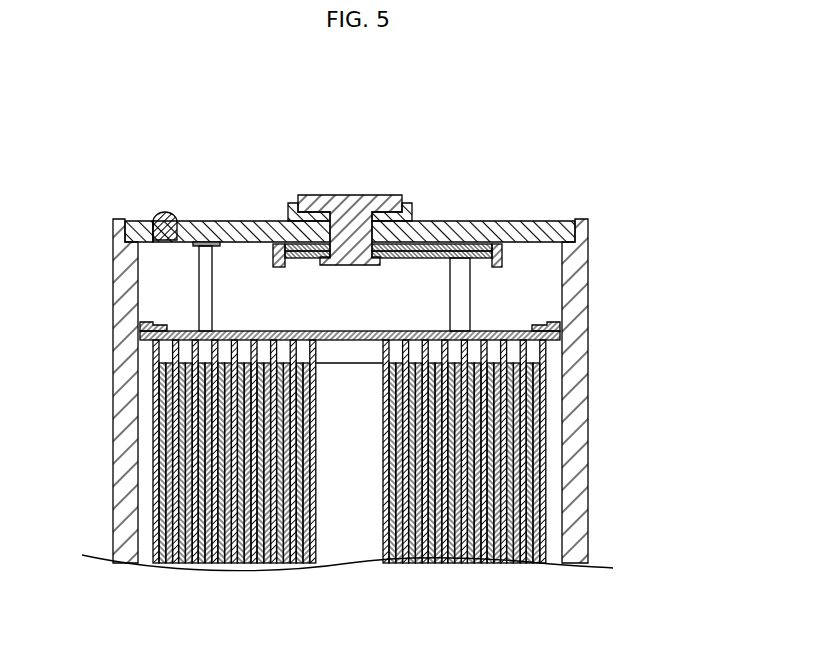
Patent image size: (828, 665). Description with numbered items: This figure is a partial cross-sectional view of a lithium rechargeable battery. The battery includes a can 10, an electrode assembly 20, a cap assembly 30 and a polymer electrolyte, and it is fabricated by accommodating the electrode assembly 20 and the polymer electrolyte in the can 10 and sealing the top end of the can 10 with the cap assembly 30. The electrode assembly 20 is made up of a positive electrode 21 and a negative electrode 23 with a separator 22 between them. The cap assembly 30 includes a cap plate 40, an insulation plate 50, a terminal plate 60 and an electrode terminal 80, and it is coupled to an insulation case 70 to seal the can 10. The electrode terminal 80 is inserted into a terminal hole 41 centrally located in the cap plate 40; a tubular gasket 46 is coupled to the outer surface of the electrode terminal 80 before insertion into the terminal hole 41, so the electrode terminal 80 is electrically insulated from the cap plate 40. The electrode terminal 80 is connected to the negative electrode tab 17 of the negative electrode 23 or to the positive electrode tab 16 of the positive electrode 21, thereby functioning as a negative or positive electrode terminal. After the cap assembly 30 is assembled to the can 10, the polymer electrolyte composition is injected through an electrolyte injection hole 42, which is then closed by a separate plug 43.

The can 10 is at (589, 477).
The positive electrode tab 16 is at (205, 272).
The negative electrode tab 17 is at (470, 298).
The electrode assembly 20 is at (398, 481).
The positive electrode 21 is at (530, 563).
The separator 22 is at (546, 563).
The negative electrode 23 is at (513, 563).
The cap assembly 30 is at (384, 219).
The cap plate 40 is at (519, 219).
The terminal hole 41 is at (313, 233).
The electrolyte injection hole 42 is at (143, 225).
The plug 43 is at (166, 213).
The tubular gasket 46 is at (407, 203).
The insulation plate 50 is at (500, 258).
The terminal plate 60 is at (414, 262).
The insulation case 70 is at (177, 331).
The electrode terminal 80 is at (348, 202).